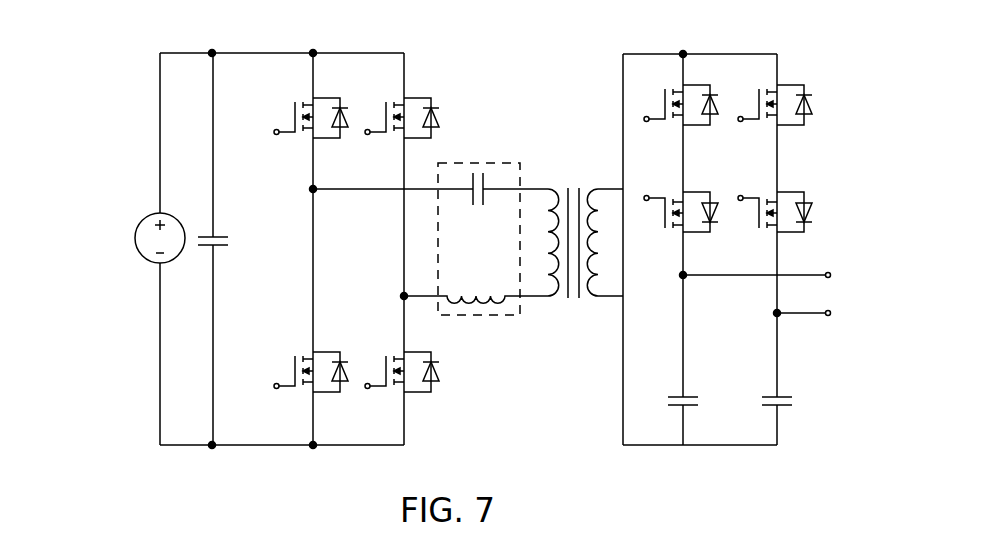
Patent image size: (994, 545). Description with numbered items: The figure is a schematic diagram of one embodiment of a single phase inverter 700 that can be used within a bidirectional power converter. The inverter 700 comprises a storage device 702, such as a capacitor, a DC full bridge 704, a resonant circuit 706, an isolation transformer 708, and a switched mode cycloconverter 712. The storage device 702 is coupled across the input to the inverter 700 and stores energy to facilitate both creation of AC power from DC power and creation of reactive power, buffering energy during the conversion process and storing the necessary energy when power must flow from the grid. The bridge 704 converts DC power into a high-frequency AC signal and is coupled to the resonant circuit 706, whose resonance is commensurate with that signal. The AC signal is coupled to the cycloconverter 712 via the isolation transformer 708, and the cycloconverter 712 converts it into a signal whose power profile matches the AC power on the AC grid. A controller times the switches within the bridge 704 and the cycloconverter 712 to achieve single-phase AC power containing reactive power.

The single phase inverter 700 is at (852, 21).
The storage device 702 is at (217, 235).
The DC full bridge 704 is at (422, 82).
The resonant circuit 706 is at (483, 334).
The isolation transformer 708 is at (573, 152).
The switched mode cycloconverter 712 is at (796, 174).